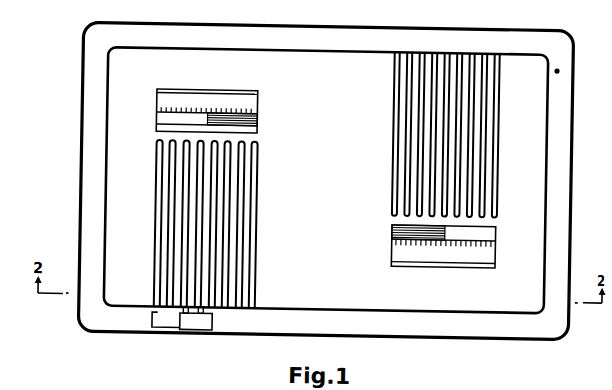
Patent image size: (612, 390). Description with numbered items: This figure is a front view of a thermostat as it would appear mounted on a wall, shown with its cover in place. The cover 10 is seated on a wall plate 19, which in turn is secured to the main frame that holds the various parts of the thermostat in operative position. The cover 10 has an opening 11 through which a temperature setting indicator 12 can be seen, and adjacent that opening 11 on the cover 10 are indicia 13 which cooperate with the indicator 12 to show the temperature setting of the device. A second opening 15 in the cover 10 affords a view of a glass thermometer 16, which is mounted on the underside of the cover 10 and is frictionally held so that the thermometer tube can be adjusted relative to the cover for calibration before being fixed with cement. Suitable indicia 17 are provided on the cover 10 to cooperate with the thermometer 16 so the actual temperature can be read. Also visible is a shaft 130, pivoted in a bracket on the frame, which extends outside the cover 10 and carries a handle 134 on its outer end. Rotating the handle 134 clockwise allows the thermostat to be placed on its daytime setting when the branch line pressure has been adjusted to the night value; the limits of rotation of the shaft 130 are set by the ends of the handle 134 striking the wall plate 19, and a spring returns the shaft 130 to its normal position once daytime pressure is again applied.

The cover 10 is at (445, 311).
The opening 11 is at (257, 121).
The temperature setting indicator 12 is at (251, 132).
The indicia 13 is at (221, 102).
The second opening 15 is at (497, 238).
The glass thermometer 16 is at (394, 235).
The indicia 17 is at (462, 256).
The wall plate 19 is at (530, 336).
The shaft 130 is at (208, 313).
The handle 134 is at (201, 333).